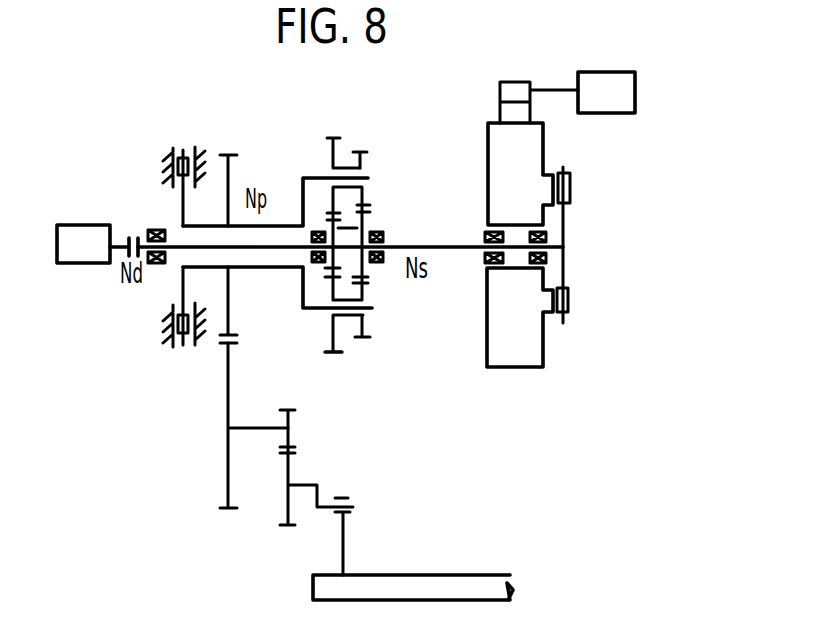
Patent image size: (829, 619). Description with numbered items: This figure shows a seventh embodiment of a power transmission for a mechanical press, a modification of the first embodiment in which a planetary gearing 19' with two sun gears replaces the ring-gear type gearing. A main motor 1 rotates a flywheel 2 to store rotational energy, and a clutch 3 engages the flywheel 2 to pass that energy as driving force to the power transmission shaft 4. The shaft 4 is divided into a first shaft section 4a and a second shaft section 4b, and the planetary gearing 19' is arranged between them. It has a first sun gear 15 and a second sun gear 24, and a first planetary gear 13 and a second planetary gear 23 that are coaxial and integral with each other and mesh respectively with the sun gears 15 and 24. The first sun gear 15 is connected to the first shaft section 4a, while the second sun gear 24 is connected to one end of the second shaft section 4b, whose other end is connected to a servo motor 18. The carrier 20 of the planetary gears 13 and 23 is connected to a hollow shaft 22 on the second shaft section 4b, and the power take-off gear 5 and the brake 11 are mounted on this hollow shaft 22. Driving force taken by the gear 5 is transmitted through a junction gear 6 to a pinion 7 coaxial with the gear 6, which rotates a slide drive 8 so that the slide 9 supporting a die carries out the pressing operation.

The main motor 1 is at (635, 92).
The flywheel 2 is at (538, 368).
The clutch 3 is at (570, 302).
The power transmission shaft 4 is at (457, 256).
The first shaft section 4a is at (445, 237).
The second shaft section 4b is at (178, 245).
The power take-off gear 5 is at (228, 170).
The junction gear 6 is at (227, 470).
The pinion 7 is at (290, 413).
The slide drive 8 is at (350, 478).
The slide 9 is at (440, 572).
The brake 11 is at (183, 155).
The first planetary gear 13 is at (367, 160).
The first sun gear 15 is at (363, 268).
The servo motor 18 is at (83, 264).
The planetary gearing 19' is at (371, 372).
The carrier 20 is at (315, 178).
The hollow shaft 22 is at (262, 268).
The second planetary gear 23 is at (335, 155).
The second sun gear 24 is at (378, 225).